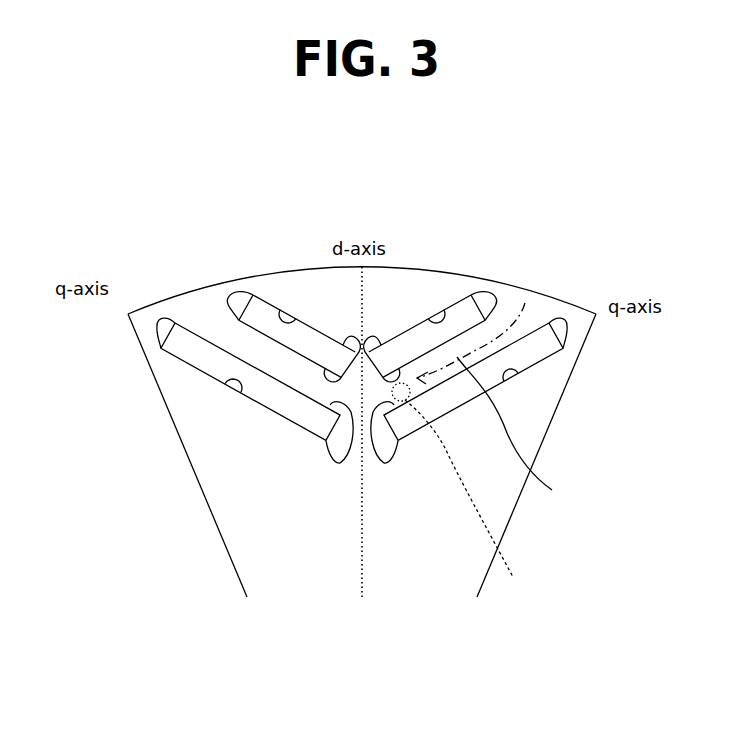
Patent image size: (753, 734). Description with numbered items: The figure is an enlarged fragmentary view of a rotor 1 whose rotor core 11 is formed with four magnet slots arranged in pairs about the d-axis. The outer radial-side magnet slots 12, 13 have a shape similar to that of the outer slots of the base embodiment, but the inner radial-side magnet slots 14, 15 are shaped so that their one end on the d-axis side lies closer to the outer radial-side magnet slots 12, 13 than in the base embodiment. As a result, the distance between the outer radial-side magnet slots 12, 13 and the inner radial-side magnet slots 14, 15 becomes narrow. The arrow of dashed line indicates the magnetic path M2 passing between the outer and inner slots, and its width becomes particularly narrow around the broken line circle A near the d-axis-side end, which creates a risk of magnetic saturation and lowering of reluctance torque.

The rotor 1 is at (381, 454).
The rotor core 11 is at (282, 558).
The outer radial-side magnet slot 12 is at (292, 311).
The outer radial-side magnet slot 13 is at (437, 318).
The inner radial-side magnet slot 14 is at (245, 397).
The inner radial-side magnet slot 15 is at (507, 381).
The magnetic path M2 is at (594, 487).
The broken line circle A is at (461, 494).